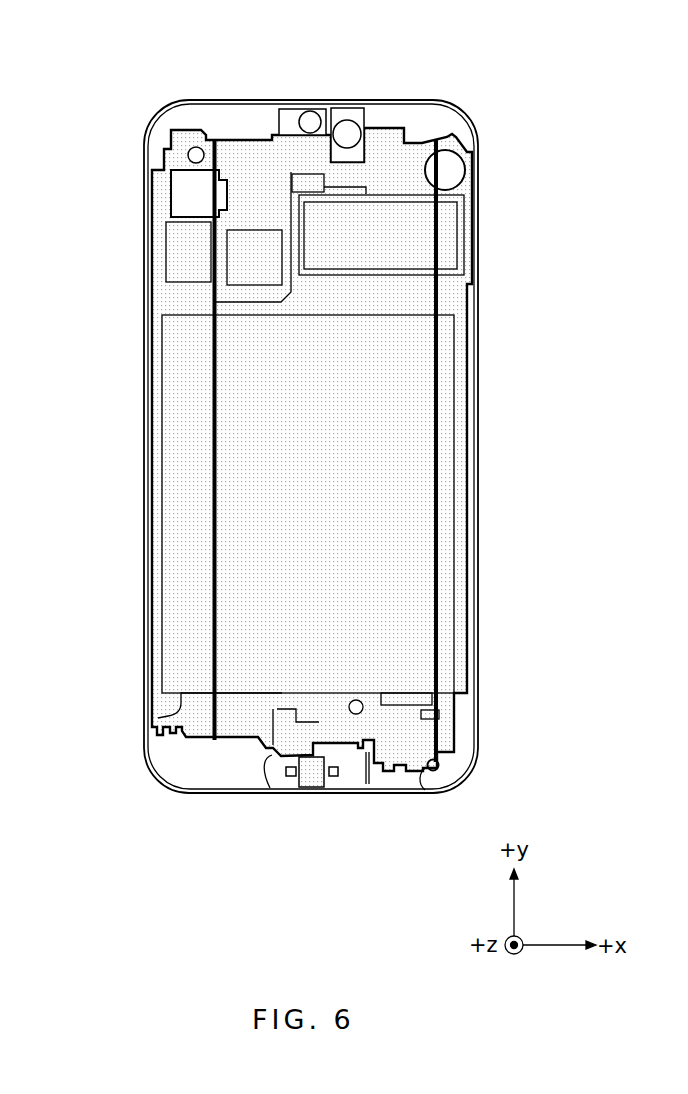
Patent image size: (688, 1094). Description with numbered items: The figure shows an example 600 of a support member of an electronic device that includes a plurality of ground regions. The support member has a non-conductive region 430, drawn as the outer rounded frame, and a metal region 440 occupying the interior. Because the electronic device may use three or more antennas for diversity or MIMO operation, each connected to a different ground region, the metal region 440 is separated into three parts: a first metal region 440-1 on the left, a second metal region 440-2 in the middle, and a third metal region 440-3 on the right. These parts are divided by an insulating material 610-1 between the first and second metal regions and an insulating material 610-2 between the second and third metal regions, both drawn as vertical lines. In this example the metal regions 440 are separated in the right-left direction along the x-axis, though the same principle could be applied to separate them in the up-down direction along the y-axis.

The example of a support member including a plurality of ground regions 600 is at (313, 79).
The non-conductive region 430 is at (145, 131).
The metal region 440 is at (65, 849).
The first metal region 440-1 is at (182, 454).
The second metal region 440-2 is at (277, 562).
The third metal region 440-3 is at (449, 477).
The insulating material 610-1 is at (211, 369).
The insulating material 610-2 is at (437, 363).